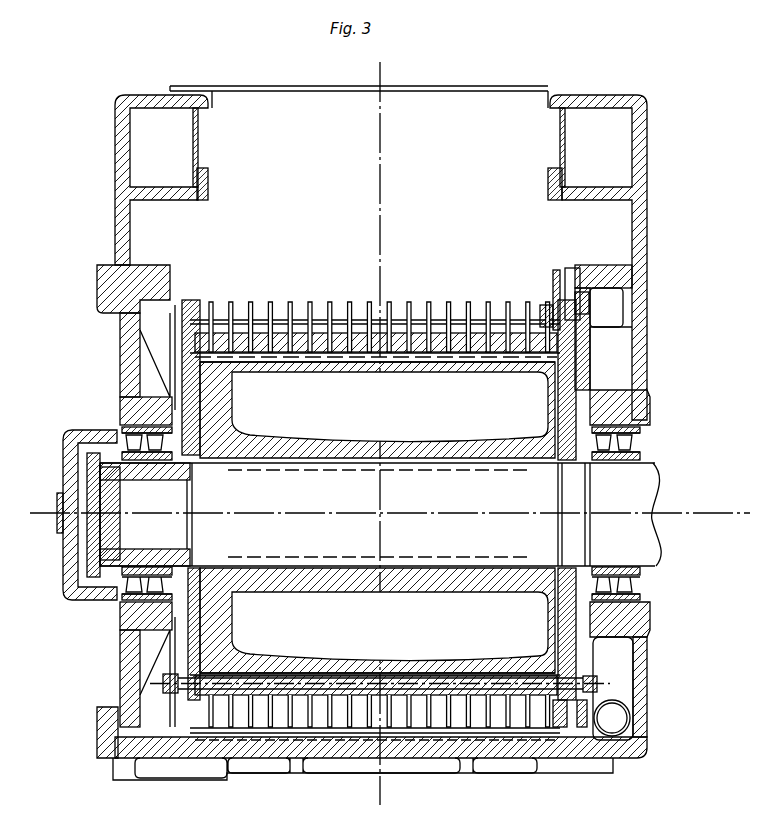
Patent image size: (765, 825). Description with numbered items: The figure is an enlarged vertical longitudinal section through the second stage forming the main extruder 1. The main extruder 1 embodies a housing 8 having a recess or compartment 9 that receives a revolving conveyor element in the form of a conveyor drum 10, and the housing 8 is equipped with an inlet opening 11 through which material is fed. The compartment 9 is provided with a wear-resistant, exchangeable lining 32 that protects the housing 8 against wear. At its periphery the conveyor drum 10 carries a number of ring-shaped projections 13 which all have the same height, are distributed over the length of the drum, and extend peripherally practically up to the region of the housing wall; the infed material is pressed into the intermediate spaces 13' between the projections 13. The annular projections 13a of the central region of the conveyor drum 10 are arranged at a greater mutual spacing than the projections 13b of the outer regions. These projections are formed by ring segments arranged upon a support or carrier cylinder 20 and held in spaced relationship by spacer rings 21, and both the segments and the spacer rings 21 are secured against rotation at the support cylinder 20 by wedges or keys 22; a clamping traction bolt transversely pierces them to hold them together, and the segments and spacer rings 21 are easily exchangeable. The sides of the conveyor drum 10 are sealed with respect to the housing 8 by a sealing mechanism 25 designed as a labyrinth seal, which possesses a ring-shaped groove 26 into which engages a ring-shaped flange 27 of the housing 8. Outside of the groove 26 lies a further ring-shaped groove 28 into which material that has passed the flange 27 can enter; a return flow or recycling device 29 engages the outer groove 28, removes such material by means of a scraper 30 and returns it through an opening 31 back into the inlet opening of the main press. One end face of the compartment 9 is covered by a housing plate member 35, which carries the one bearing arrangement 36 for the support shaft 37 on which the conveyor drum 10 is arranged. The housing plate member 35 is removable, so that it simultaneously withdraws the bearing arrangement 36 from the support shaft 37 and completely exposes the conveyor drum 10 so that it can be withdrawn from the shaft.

The main extruder 1 is at (659, 212).
The housing 8 is at (640, 150).
The recess or compartment 9 is at (335, 758).
The conveyor drum 10 is at (303, 292).
The inlet opening 11 is at (329, 188).
The projections 13 is at (379, 485).
The ring-shaped projections of the central region 13a is at (352, 302).
The projections of the outer regions 13b is at (240, 302).
The intermediate spaces 13' is at (456, 305).
The support or carrier cylinder 20 is at (272, 374).
The spacer rings 21 is at (418, 302).
The wedges or keys 22 is at (440, 355).
The sealing mechanism 25 is at (528, 276).
The ring-shaped groove 26 is at (547, 318).
The ring-shaped flange 27 is at (588, 345).
The further ring-shaped groove 28 is at (596, 306).
The return flow or recycling device 29 is at (573, 270).
The scraper 30 is at (589, 312).
The opening 31 is at (553, 280).
The wear-resistant, exchangeable lining 32 is at (424, 740).
The housing plate member 35 is at (120, 355).
The bearing arrangement 36 is at (68, 449).
The support shaft 37 is at (472, 498).